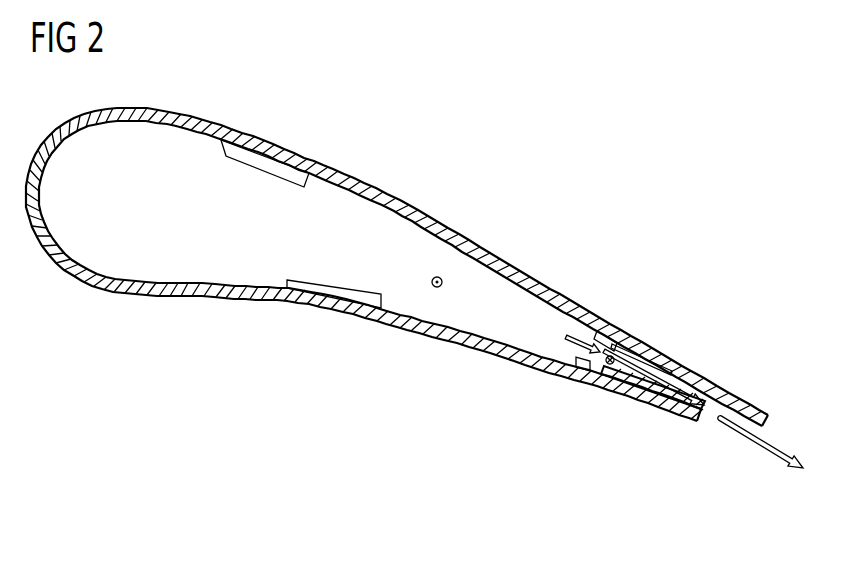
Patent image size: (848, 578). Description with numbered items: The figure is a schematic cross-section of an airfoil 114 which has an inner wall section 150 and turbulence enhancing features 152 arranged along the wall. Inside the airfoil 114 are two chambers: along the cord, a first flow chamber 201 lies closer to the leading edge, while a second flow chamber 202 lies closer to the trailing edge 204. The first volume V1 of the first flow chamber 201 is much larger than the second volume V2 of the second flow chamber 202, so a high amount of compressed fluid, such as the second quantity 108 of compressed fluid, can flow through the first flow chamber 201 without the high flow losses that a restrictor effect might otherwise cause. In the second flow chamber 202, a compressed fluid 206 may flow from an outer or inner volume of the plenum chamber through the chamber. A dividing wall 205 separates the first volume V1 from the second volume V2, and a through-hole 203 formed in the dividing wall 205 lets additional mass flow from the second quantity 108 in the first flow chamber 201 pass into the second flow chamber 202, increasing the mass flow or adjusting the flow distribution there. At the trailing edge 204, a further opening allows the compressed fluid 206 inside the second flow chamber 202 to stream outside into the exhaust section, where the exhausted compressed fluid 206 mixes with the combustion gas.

The airfoil 114 is at (341, 149).
The inner wall section 150 is at (226, 284).
The turbulence enhancing features 152 is at (270, 163).
The second quantity of the compressed fluid 108 is at (437, 277).
The first flow chamber 201 is at (249, 240).
The second flow chamber 202 is at (668, 372).
The through-hole 203 is at (588, 334).
The trailing edge 204 is at (748, 464).
The dividing wall 205 is at (582, 372).
The compressed fluid 206 is at (611, 382).
The first volume V1 is at (350, 269).
The second volume V2 is at (620, 340).